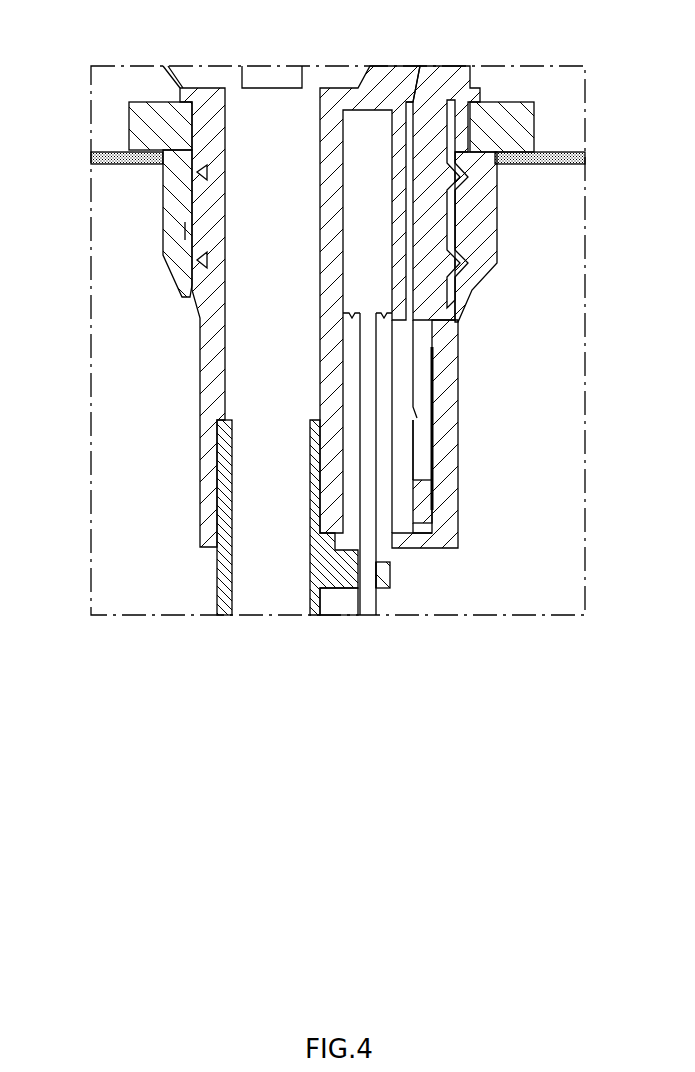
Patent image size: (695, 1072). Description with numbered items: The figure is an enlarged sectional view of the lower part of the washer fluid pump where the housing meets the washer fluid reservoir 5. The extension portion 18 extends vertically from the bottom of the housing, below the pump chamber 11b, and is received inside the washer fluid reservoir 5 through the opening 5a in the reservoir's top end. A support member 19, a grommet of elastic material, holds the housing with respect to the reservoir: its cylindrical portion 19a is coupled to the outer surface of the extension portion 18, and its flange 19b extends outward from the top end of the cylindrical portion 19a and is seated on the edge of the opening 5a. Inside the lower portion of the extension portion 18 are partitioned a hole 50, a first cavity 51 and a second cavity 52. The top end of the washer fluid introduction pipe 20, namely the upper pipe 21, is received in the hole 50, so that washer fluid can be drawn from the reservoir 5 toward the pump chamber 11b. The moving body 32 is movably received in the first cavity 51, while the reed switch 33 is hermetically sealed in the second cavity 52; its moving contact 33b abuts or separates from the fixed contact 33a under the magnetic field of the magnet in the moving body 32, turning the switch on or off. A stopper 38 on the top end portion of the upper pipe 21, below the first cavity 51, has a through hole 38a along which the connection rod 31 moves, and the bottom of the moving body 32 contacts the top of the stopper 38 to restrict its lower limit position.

The washer fluid reservoir 5 is at (585, 152).
The opening 5a is at (498, 176).
The pump chamber 11b is at (340, 78).
The extension portion 18 is at (213, 398).
The support member 19 is at (148, 172).
The cylindrical portion 19a is at (183, 228).
The flange 19b is at (140, 124).
The washer fluid introduction pipe 20 is at (230, 556).
The upper pipe 21 is at (222, 598).
The connection rod 31 is at (373, 552).
The moving body 32 is at (375, 228).
The reed switch 33 is at (442, 445).
The fixed contact 33a is at (432, 484).
The moving contact 33b is at (432, 402).
The stopper 38 is at (396, 585).
The through hole 38a is at (375, 577).
The hole 50 is at (284, 409).
The first cavity 51 is at (344, 336).
The second cavity 52 is at (432, 366).